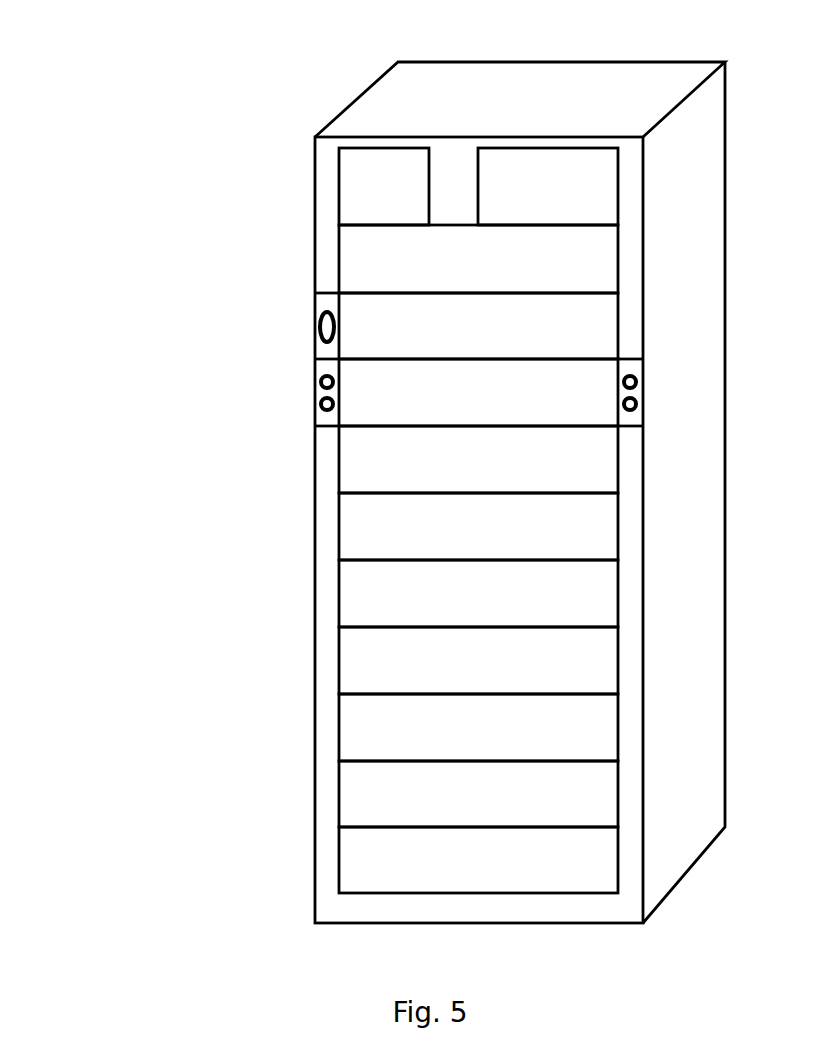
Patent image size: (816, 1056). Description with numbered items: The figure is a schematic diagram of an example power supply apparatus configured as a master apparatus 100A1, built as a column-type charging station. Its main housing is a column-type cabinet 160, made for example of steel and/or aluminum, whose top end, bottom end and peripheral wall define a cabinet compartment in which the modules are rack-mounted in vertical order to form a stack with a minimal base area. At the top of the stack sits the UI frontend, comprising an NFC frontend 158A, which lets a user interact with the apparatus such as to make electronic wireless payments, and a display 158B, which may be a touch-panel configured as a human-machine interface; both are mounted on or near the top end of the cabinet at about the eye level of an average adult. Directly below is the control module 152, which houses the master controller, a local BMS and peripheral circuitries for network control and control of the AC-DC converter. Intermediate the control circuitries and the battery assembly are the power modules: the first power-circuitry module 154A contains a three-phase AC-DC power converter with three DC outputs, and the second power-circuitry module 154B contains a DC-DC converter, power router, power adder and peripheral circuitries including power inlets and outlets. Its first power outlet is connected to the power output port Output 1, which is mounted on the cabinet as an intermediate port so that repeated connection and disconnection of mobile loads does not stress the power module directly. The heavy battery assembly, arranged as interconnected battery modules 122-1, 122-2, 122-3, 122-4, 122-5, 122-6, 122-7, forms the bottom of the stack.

The master apparatus 100A1 is at (122, 68).
The column-type cabinet 160 is at (520, 492).
The NFC frontend 158A is at (384, 186).
The display 158B is at (548, 186).
The control module 152 is at (478, 259).
The first power-circuitry module 154A is at (466, 326).
The second power-circuitry module 154B is at (378, 392).
The power output port Output 1 is at (303, 394).
The battery module 122-1 is at (478, 459).
The battery module 122-2 is at (478, 526).
The battery module 122-3 is at (478, 593).
The battery module 122-4 is at (478, 660).
The battery module 122-5 is at (478, 727).
The battery module 122-6 is at (478, 794).
The battery module 122-7 is at (478, 860).